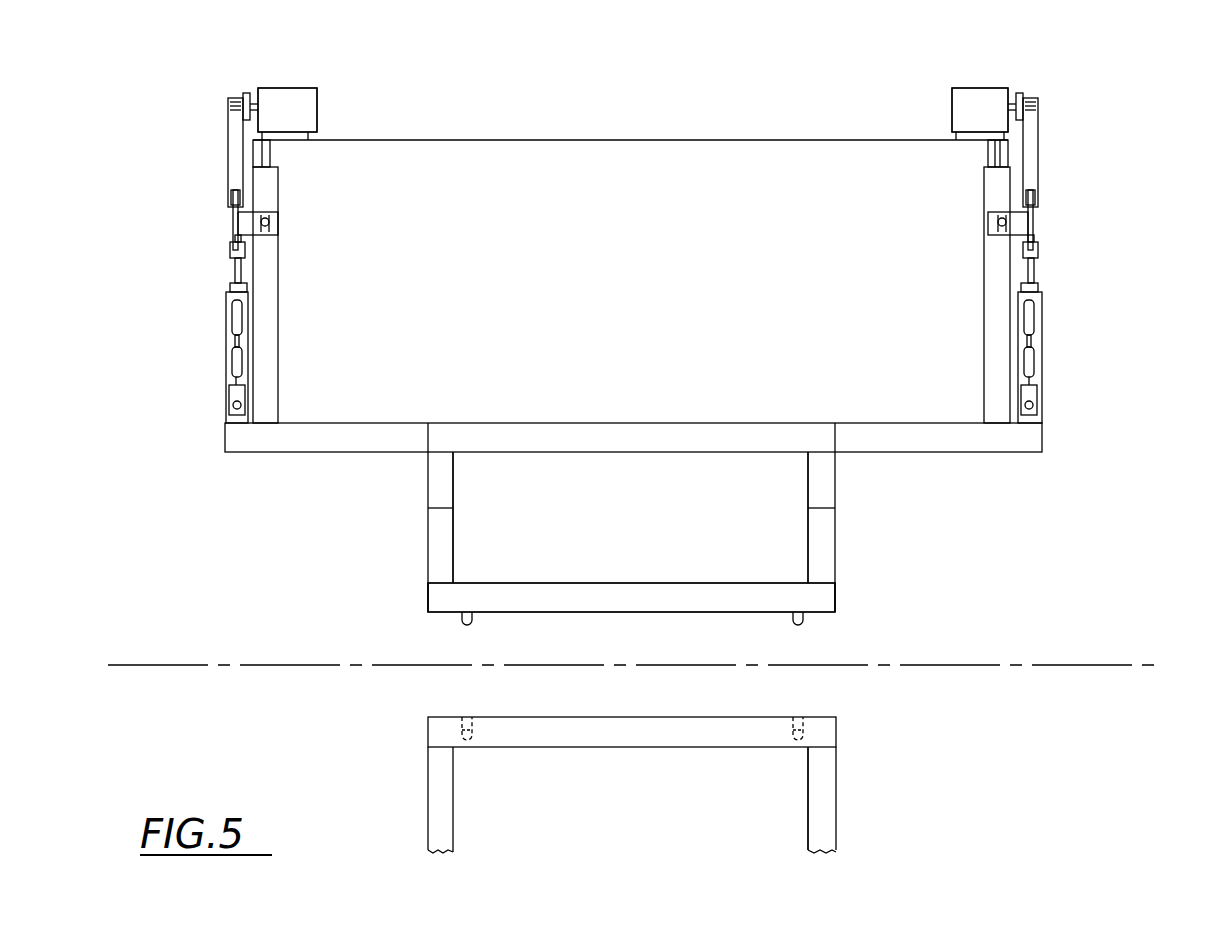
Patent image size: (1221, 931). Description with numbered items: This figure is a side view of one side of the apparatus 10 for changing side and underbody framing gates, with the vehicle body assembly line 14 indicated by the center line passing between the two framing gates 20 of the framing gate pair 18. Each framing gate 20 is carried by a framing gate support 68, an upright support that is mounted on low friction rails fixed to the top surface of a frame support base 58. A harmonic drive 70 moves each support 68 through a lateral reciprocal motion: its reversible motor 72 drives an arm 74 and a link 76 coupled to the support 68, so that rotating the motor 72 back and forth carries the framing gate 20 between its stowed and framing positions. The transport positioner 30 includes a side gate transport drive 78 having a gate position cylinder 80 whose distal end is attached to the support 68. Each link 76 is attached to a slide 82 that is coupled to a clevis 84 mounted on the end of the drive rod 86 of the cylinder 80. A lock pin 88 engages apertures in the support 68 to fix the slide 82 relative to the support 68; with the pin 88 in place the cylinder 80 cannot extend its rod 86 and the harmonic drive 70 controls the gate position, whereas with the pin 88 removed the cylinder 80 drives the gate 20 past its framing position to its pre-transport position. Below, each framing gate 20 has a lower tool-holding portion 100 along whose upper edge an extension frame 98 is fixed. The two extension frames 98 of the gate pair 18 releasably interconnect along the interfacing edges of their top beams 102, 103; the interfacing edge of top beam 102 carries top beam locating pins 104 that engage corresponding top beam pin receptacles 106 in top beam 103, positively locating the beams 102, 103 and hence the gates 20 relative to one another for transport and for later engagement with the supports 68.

The apparatus 10 is at (1152, 150).
The vehicle body assembly line 14 is at (1022, 663).
The framing gate pair 18 is at (428, 606).
The framing gate 20 is at (838, 512).
The transport positioner 30 is at (225, 352).
The frame support base 58 is at (712, 150).
The framing gate support 68 is at (280, 378).
The harmonic drive 70 is at (318, 87).
The reversible motor 72 is at (318, 113).
The arm 74 is at (230, 100).
The link 76 is at (232, 135).
The side gate transport drive 78 is at (225, 308).
The gate position cylinder 80 is at (228, 293).
The slide 82 is at (232, 212).
The clevis 84 is at (247, 250).
The drive rod 86 is at (242, 272).
The lock pin 88 is at (272, 222).
The extension frame 98 is at (832, 566).
The lower tool-holding portion 100 is at (960, 448).
The top beam 102 is at (652, 585).
The top beam 103 is at (640, 745).
The top beam locating pin 104 is at (470, 624).
The top beam pin receptacle 106 is at (475, 732).